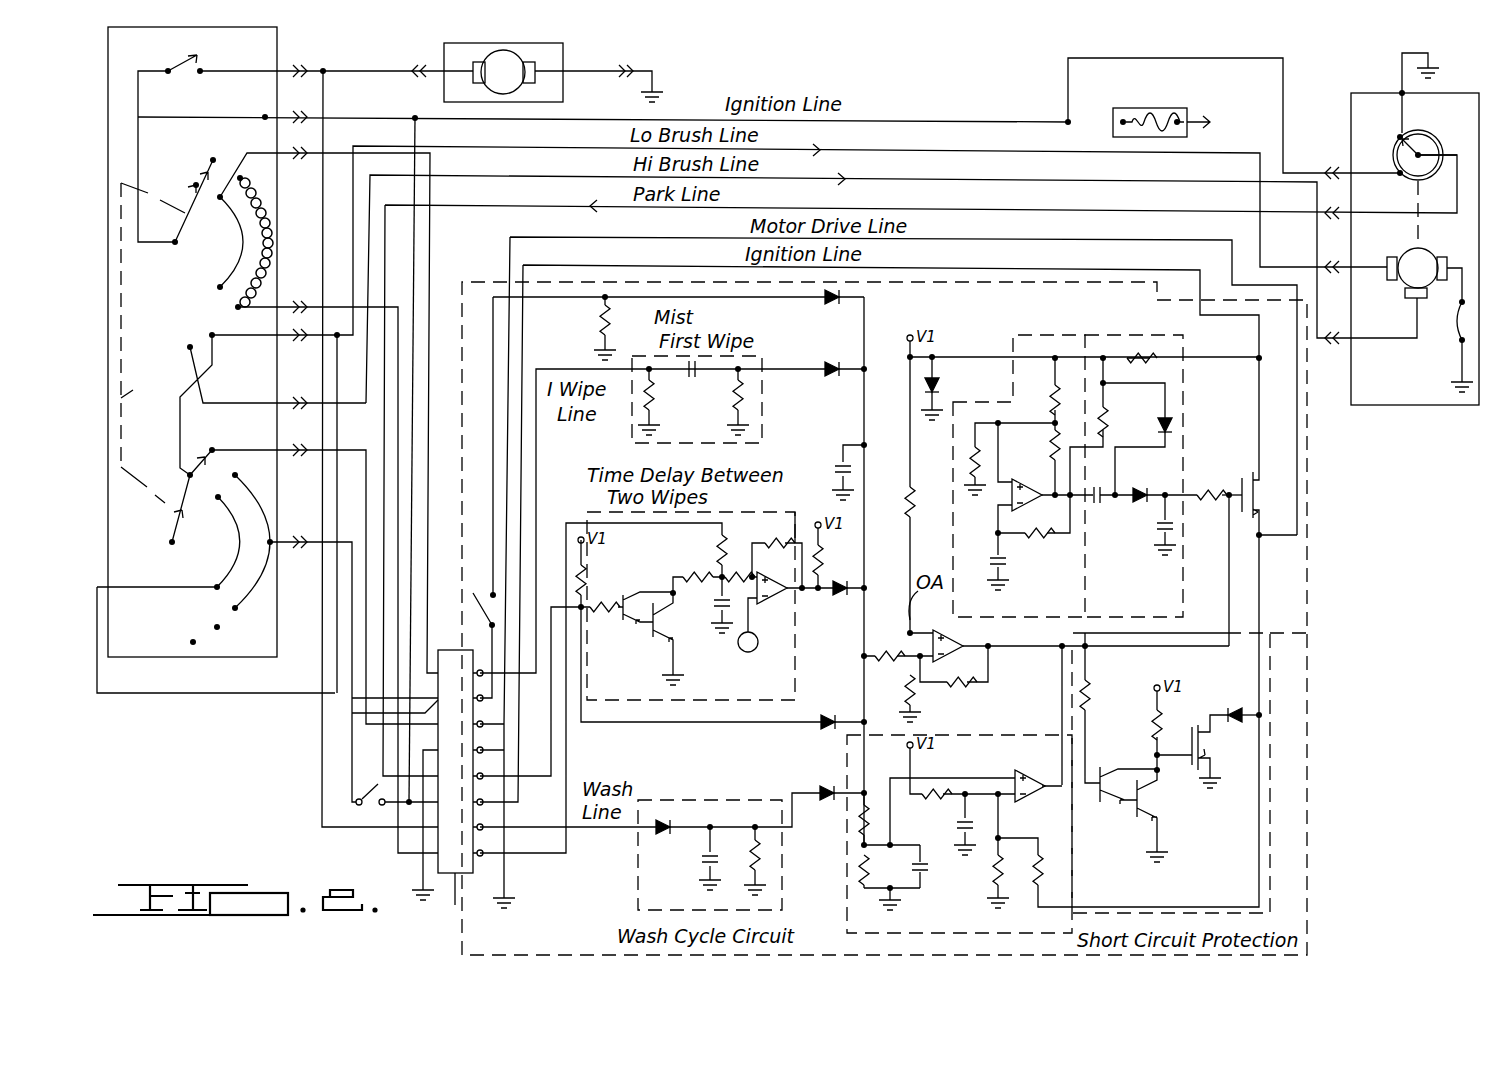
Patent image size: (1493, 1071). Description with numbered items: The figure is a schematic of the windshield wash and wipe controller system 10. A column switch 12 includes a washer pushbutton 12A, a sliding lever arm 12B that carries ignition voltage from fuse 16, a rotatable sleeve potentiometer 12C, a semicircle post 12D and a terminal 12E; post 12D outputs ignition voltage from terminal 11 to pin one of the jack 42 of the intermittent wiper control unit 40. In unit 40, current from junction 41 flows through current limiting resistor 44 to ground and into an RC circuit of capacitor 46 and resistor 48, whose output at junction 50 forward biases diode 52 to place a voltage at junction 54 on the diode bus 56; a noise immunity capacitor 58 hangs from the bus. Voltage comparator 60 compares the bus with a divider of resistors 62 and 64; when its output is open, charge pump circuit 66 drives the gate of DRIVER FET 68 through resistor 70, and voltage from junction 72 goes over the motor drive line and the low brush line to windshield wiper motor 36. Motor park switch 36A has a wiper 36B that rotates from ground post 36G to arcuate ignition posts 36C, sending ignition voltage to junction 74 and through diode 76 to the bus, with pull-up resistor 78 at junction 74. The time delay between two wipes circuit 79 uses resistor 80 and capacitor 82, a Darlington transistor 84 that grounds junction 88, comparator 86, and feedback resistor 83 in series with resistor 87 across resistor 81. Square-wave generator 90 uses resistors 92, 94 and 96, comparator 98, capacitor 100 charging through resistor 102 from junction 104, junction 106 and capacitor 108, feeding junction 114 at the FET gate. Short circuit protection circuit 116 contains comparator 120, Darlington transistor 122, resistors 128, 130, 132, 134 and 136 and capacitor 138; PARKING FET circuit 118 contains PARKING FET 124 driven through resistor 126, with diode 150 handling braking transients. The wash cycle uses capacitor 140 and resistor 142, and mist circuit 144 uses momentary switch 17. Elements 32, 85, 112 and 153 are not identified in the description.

The windshield wash and wipe controller system 10 is at (966, 71).
The terminal 11 is at (603, 393).
The column switch 12 is at (216, 360).
The pushbutton 12A is at (291, 148).
The sliding lever arm 12B is at (122, 405).
The rotatable sleeve potentiometer 12C is at (247, 248).
The semicircle post 12D is at (228, 272).
The terminal 12E is at (231, 558).
The fuse 16 is at (1112, 128).
The momentary contact-type switch 17 is at (368, 796).
The washer pump motor 32 is at (444, 93).
The windshield wiper motor 36 is at (1432, 256).
The motor park switch 36A is at (1425, 140).
The wiper 36B is at (1412, 130).
The arcuate ignition posts 36C is at (1453, 130).
The ground post 36G is at (1398, 137).
The intermittent wiper control unit 40 is at (484, 272).
The junction 41 is at (649, 360).
The jack J42 42 is at (455, 650).
The current limiting resistor 44 is at (652, 404).
The capacitor 46 is at (696, 378).
The resistor 48 is at (746, 398).
The junction 50 is at (762, 366).
The diode 52 is at (832, 360).
The junction 54 is at (868, 368).
The diode bus 56 is at (868, 548).
The noise immunity capacitor 58 is at (838, 456).
The voltage comparator 60 is at (965, 643).
The resistor 62 is at (904, 500).
The resistor 64 is at (914, 698).
The charge pump circuit 66 is at (1122, 338).
The DRIVER FET 68 is at (1265, 482).
The resistor 70 is at (1206, 504).
The junction 72 is at (1262, 540).
The junction 74 is at (578, 598).
The diode 76 is at (824, 732).
The pull-up resistor 78 is at (576, 570).
The time delay between two wipes circuit 79 is at (745, 514).
The resistor 80 is at (718, 542).
The resistor 81 is at (692, 578).
The capacitor 82 is at (716, 630).
The feedback resistor 83 is at (796, 512).
The Darlington transistor 84 is at (632, 618).
The resistor 85 is at (822, 570).
The comparator 86 is at (770, 604).
The resistor 87 is at (738, 570).
The junction 88 is at (722, 590).
The square-wave generator 90 is at (1022, 332).
The resistor 92 is at (1057, 452).
The resistor 94 is at (1052, 398).
The resistor 96 is at (972, 462).
The comparator 98 is at (1030, 480).
The capacitor 100 is at (1006, 568).
The resistor 102 is at (1035, 540).
The junction 104 is at (1064, 498).
The junction 106 is at (1120, 505).
The capacitor 108 is at (1098, 508).
The diode 112 is at (1142, 490).
The junction 114 is at (1208, 494).
The short circuit protection circuit 116 is at (1022, 735).
The PARKING FET circuit 118 is at (1272, 648).
The comparator 120 is at (1036, 780).
The Darlington transistor 122 is at (1128, 760).
The PARKING FET 124 is at (1198, 768).
The resistor 126 is at (1152, 722).
The resistor 128 is at (1044, 876).
The resistor 130 is at (940, 786).
The resistor 132 is at (994, 874).
The resistor 134 is at (864, 800).
The resistor 136 is at (858, 874).
The capacitor 138 is at (958, 826).
The capacitor 140 is at (702, 858).
The resistor 142 is at (760, 850).
The mist circuit 144 is at (586, 303).
The diode 150 is at (1230, 705).
The zener diode 153 is at (938, 384).